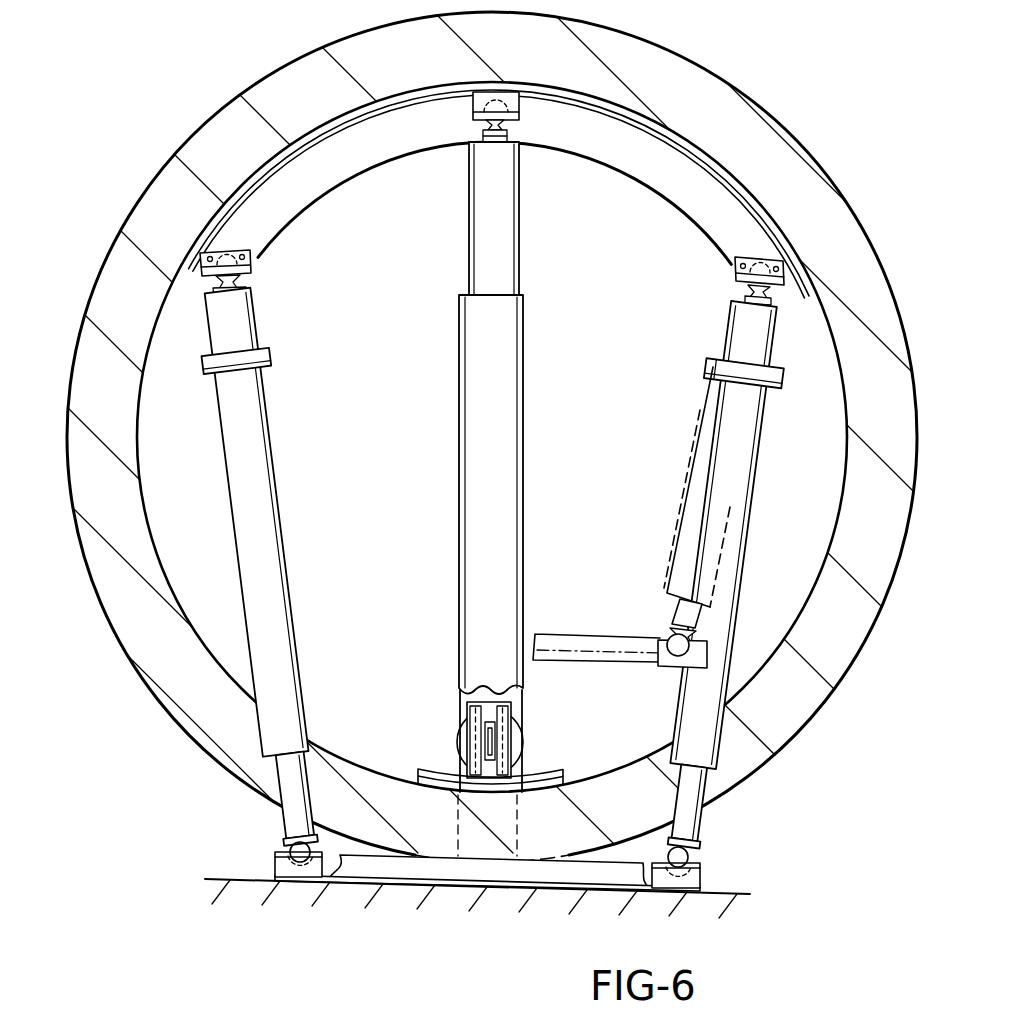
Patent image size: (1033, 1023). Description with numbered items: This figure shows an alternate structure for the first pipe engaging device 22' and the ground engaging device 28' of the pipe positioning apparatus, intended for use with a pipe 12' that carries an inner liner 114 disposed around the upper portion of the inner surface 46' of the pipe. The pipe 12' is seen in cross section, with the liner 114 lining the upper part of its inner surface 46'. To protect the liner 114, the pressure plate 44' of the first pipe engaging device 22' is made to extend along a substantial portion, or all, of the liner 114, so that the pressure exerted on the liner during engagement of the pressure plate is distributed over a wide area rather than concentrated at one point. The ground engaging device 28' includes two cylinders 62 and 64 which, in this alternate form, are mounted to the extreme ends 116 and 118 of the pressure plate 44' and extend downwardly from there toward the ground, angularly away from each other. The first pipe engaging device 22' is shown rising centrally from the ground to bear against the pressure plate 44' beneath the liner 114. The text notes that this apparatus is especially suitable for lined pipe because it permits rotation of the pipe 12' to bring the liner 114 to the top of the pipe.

The pipe 12' is at (492, 437).
The first pipe engaging device 22' is at (513, 474).
The ground engaging device 28' is at (672, 517).
The pressure plate 44' is at (494, 203).
The inner surface 46' is at (492, 437).
The cylinder 62 is at (264, 491).
The cylinder 64 is at (708, 714).
The inner liner 114 is at (712, 168).
The extreme end of pressure plate 116 is at (253, 262).
The extreme end of pressure plate 118 is at (735, 271).